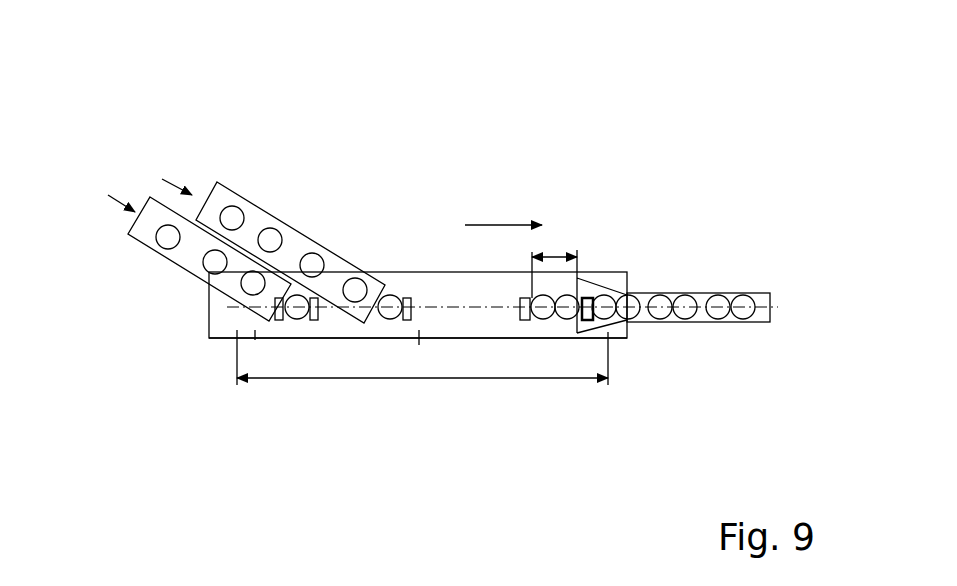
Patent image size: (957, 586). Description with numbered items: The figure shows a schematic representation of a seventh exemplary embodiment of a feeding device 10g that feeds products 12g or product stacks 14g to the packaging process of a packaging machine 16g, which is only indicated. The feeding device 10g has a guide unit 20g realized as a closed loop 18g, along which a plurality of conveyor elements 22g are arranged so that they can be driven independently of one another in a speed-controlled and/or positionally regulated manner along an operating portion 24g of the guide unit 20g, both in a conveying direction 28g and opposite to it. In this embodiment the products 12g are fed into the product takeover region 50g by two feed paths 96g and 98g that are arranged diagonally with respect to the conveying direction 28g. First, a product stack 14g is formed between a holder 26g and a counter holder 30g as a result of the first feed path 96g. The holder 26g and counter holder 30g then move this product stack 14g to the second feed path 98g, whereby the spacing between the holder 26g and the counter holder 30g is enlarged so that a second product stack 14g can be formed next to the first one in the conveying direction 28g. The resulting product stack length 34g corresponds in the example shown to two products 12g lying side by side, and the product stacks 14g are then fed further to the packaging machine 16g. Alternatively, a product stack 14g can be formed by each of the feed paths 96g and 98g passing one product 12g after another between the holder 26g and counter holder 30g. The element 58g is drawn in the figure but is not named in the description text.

The feeding device 10g is at (637, 217).
The product 12g is at (222, 200).
The product stack 14g is at (391, 284).
The packaging machine 16g is at (738, 217).
The closed loop 18g is at (232, 308).
The guide unit 20g is at (193, 303).
The conveyor element 22g is at (408, 293).
The operating portion 24g is at (483, 378).
The holder 26g is at (283, 317).
The conveying direction 28g is at (503, 225).
The counter holder 30g is at (317, 323).
The product stack length 34g is at (556, 253).
The product takeover region 50g is at (397, 343).
The wedge 58g is at (587, 238).
The first feed path 96g is at (148, 213).
The second feed path 98g is at (232, 217).